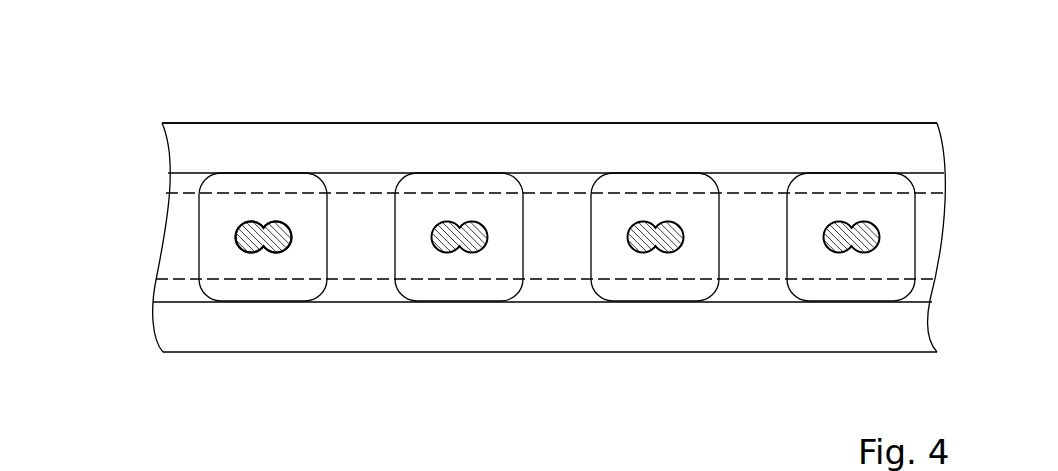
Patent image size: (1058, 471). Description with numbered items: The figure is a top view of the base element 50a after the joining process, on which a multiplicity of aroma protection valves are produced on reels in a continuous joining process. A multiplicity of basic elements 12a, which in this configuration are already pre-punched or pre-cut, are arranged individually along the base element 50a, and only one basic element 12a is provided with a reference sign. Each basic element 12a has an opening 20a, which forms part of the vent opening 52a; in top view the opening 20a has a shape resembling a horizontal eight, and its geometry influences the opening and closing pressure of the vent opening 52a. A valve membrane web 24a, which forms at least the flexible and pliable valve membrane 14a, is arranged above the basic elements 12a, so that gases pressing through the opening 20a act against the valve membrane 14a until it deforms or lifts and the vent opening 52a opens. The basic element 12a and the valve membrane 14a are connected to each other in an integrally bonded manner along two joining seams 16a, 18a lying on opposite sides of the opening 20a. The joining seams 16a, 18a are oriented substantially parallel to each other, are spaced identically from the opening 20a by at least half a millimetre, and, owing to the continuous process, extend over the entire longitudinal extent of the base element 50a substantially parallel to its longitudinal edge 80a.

The basic element 12a is at (226, 255).
The valve membrane 14a is at (223, 220).
The joining seam 16a is at (173, 280).
The joining seam 18a is at (192, 195).
The opening 20a is at (275, 237).
The valve membrane web 24a is at (559, 286).
The base element 50a is at (631, 137).
The vent opening 52a is at (297, 233).
The longitudinal edge 80a is at (740, 123).